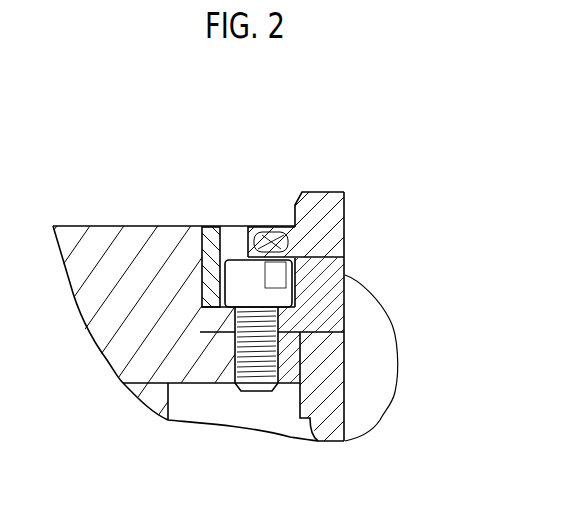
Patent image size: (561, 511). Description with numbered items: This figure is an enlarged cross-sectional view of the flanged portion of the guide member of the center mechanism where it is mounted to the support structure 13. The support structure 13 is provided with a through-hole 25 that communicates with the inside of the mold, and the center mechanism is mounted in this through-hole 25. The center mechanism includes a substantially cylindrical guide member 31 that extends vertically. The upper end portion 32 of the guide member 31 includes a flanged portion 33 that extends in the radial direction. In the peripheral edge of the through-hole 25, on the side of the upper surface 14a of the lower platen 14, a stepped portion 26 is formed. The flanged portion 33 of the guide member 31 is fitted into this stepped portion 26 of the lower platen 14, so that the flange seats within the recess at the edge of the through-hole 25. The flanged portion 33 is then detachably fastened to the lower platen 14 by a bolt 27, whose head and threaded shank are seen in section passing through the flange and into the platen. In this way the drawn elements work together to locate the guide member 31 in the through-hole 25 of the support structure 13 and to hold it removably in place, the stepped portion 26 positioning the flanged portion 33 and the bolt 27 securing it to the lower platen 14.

The support structure 13 is at (230, 287).
The lower platen 14 is at (142, 237).
The upper surface 14a is at (90, 226).
The through-hole 25 is at (347, 220).
The stepped portion 26 is at (228, 308).
The bolt 27 is at (235, 277).
The guide member 31 is at (307, 269).
The upper end portion 32 is at (347, 274).
The flanged portion 33 is at (203, 317).